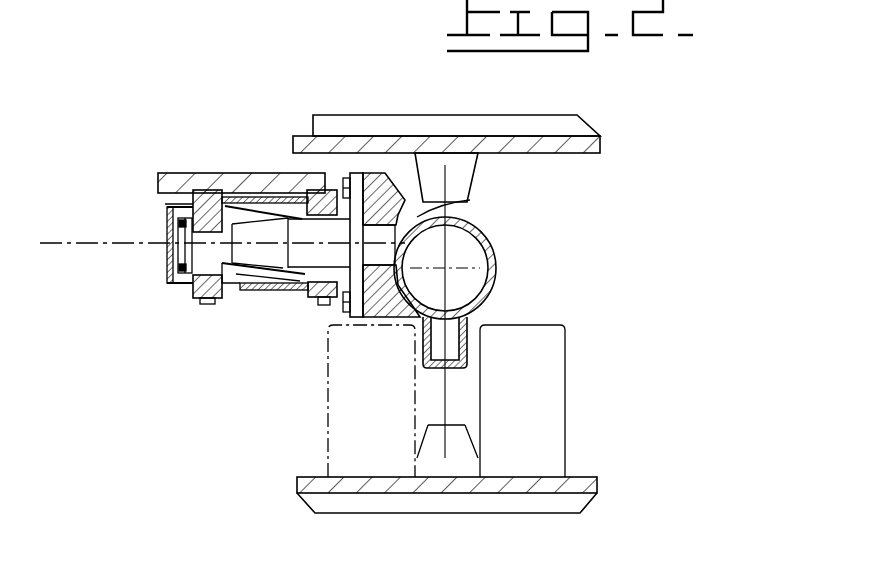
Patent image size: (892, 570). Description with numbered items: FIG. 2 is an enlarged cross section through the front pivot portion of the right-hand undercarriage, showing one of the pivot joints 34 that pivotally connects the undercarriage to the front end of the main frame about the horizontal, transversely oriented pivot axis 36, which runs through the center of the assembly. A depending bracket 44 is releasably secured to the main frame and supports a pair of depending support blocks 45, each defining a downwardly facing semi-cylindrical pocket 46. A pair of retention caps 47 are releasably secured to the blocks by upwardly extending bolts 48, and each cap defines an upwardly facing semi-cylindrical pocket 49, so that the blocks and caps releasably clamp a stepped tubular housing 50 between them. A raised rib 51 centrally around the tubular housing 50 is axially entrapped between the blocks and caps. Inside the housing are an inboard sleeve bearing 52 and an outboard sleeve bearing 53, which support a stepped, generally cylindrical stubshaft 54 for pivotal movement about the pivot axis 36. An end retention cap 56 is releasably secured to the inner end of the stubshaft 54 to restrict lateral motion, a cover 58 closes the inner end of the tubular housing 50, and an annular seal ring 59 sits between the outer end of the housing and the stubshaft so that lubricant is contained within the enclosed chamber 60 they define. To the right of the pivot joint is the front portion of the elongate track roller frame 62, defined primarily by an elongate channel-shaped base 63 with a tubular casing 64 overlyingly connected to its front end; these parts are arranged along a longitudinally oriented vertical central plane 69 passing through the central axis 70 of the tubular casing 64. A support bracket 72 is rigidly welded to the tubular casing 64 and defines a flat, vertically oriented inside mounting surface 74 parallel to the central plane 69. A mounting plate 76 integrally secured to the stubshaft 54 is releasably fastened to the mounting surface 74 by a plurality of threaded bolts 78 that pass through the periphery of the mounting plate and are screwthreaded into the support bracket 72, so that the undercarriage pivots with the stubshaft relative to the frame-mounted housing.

The pivot joint 34 is at (213, 305).
The pivot axis 36 is at (70, 250).
The depending bracket 44 is at (177, 178).
The support blocks 45 is at (210, 190).
The pocket 46 is at (163, 203).
The retention caps 47 is at (193, 297).
The bolts 48 is at (203, 305).
The pocket 49 is at (302, 290).
The tubular housing 50 is at (250, 195).
The raised rib 51 is at (258, 288).
The inboard sleeve bearing 52 is at (170, 232).
The outboard sleeve bearing 53 is at (366, 210).
The stubshaft 54 is at (325, 243).
The end retention cap 56 is at (178, 255).
The cover 58 is at (165, 272).
The annular seal ring 59 is at (343, 298).
The enclosed chamber 60 is at (241, 278).
The track roller frame 62 is at (480, 262).
The channel-shaped base 63 is at (455, 367).
The tubular casing 64 is at (498, 258).
The central plane 69 is at (443, 190).
The central axis 70 is at (493, 295).
The support bracket 72 is at (462, 207).
The mounting surface 74 is at (358, 320).
The mounting plate 76 is at (357, 175).
The bolts 78 is at (343, 193).